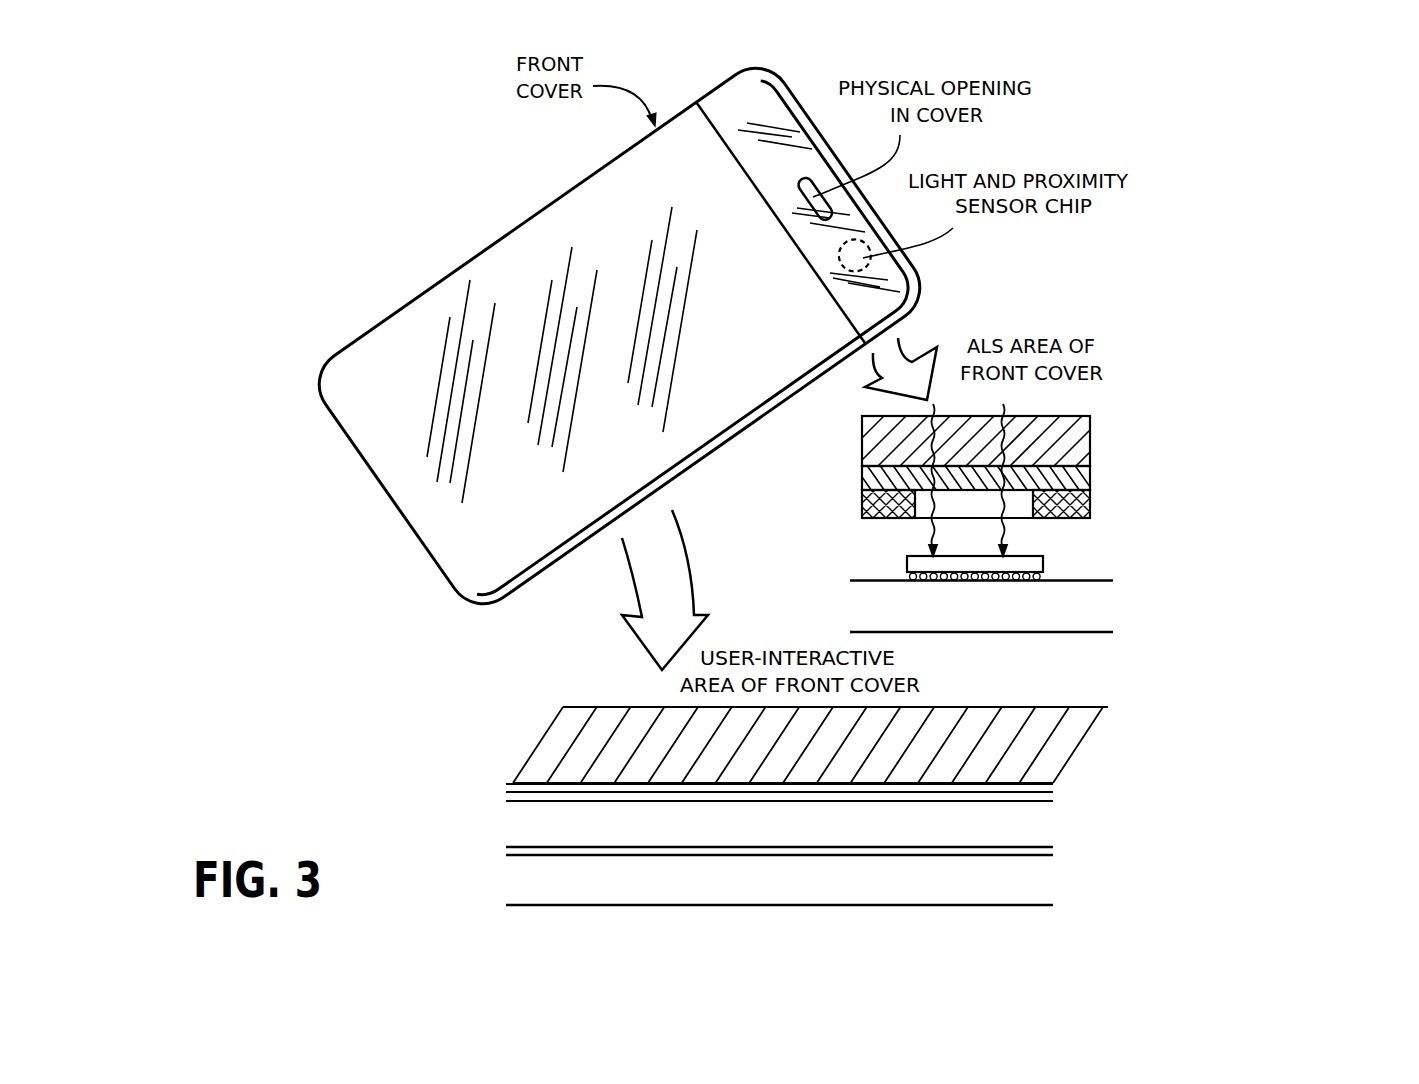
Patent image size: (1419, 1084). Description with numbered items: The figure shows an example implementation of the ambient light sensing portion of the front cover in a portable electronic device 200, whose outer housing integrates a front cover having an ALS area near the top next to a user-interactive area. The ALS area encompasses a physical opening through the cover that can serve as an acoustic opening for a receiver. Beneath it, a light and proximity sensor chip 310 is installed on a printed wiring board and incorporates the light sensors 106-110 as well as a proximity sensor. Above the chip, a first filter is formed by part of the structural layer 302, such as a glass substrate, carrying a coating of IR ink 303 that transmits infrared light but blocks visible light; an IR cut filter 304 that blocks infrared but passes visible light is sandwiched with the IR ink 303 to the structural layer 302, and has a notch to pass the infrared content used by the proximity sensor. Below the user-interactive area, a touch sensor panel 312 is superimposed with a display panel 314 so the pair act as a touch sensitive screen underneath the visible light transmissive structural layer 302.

The device 200 is at (318, 564).
The structural layer 302 is at (1090, 441).
The IR ink 303 is at (1090, 478).
The IR cut filter 304 is at (1088, 503).
The light sensors 106-110 is at (907, 557).
The light and proximity sensor chip 310 is at (1050, 535).
The touch sensor panel 312 is at (883, 833).
The display panel 314 is at (825, 893).